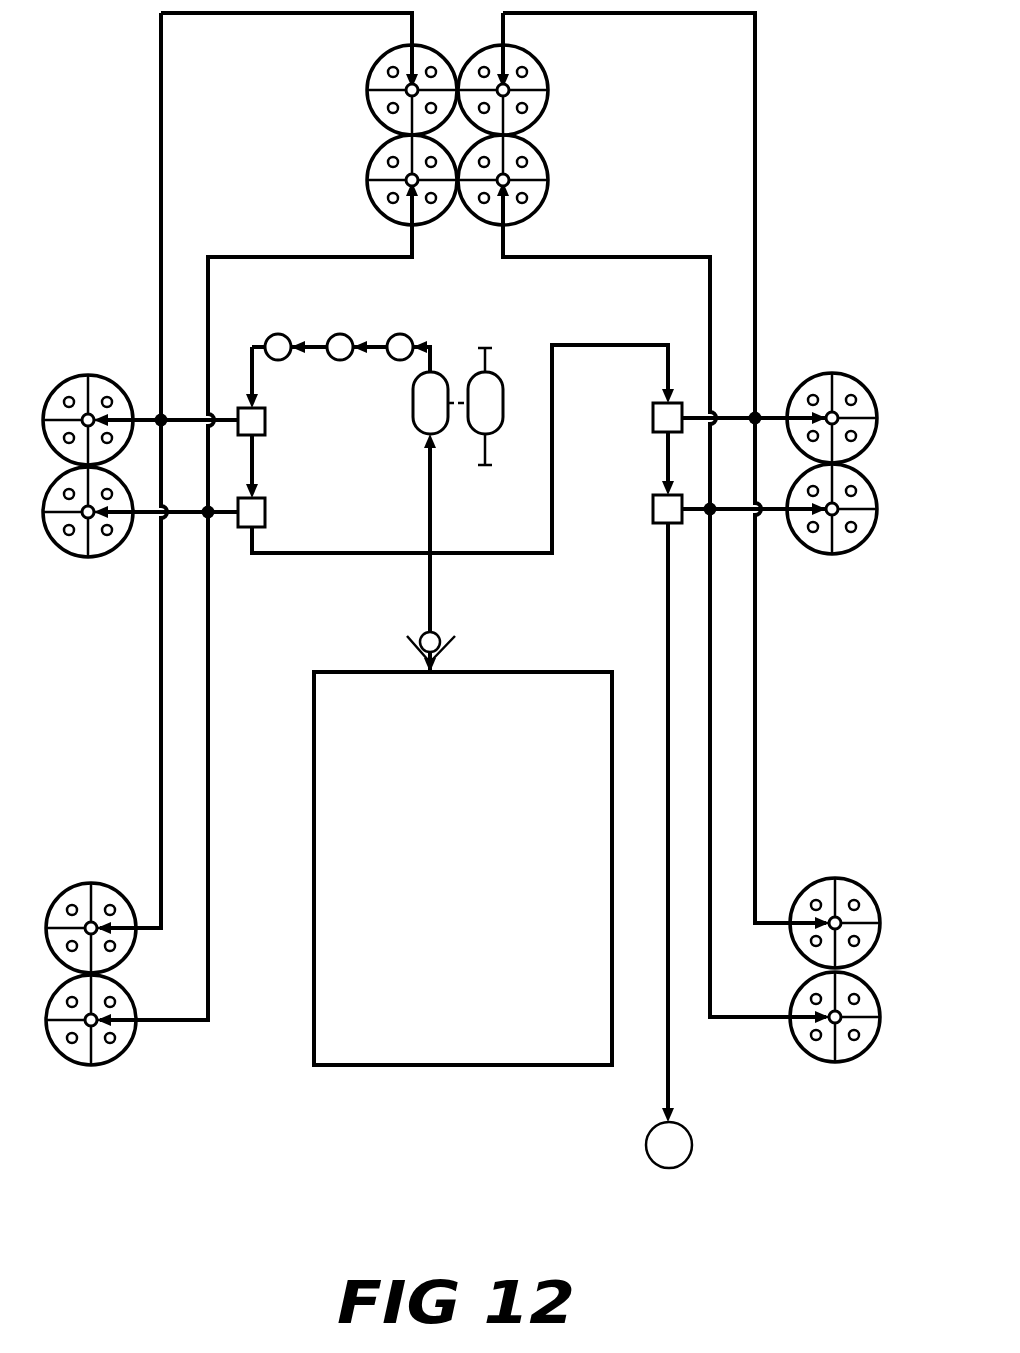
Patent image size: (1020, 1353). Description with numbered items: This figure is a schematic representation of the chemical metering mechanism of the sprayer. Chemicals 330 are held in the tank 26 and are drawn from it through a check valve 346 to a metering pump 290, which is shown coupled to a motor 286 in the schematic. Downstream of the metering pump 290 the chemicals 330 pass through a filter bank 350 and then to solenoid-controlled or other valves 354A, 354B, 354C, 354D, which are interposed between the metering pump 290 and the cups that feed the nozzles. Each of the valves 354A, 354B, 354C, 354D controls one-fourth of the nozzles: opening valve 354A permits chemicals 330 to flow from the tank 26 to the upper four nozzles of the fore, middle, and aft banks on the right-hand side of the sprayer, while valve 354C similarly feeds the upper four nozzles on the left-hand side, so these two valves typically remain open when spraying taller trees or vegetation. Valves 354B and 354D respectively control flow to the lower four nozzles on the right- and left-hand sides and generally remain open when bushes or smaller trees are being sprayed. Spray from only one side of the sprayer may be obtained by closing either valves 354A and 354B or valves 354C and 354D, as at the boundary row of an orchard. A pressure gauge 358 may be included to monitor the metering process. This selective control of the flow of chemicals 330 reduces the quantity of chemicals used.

The filter bank 350 is at (412, 311).
The motor 286 is at (492, 372).
The metering pump 290 is at (413, 428).
The valve 354A is at (265, 420).
The valve 354B is at (265, 514).
The valve 354C is at (653, 414).
The valve 354D is at (653, 506).
The check valve 346 is at (440, 636).
The chemicals 330 is at (434, 668).
The pressure gauge 358 is at (688, 1160).
The tank 26 is at (459, 956).